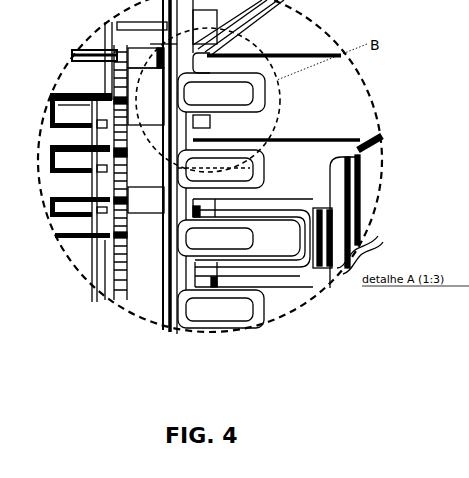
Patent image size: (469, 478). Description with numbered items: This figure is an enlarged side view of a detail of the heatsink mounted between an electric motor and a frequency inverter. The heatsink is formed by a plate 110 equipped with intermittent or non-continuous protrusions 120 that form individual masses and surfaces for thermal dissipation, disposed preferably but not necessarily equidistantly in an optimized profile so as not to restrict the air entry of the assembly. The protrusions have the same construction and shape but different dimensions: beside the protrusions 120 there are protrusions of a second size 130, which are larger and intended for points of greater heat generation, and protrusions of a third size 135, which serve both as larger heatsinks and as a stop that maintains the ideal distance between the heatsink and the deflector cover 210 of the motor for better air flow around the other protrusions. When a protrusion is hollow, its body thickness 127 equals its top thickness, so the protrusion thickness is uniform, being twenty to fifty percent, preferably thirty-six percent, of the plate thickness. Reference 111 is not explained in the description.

The body thickness 127 is at (330, 34).
The plate 110 is at (113, 166).
The finned heat sink 111 is at (262, 167).
The protrusions 120 is at (230, 314).
The protrusions of a second size 130 is at (281, 305).
The protrusions of a third size 135 is at (303, 272).
The deflector cover 210 is at (338, 188).